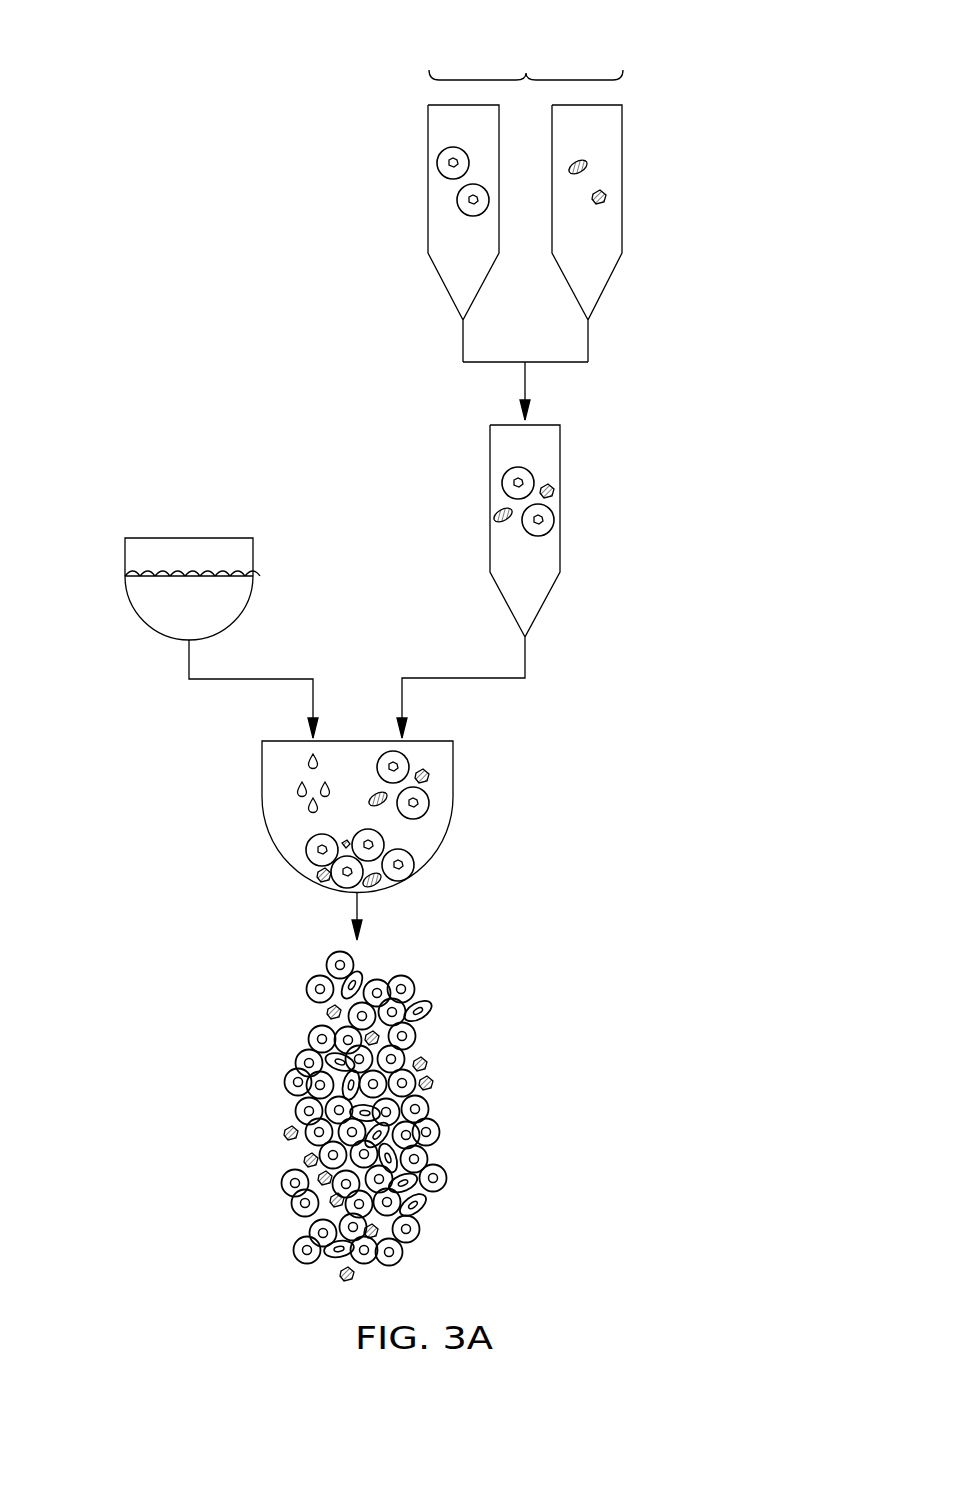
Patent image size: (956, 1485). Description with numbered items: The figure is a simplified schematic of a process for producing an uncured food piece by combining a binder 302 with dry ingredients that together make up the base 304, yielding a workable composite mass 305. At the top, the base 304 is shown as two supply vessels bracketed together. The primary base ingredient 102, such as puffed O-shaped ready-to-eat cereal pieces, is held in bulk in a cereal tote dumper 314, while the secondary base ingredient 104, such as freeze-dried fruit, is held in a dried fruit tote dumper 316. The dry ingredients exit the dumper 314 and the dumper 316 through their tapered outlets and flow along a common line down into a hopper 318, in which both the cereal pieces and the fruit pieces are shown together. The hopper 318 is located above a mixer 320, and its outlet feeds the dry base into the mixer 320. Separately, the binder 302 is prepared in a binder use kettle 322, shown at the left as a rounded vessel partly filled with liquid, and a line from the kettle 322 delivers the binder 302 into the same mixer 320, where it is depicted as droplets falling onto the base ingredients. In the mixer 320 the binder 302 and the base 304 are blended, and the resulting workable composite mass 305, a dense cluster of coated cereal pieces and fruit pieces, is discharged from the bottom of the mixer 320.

The base 304 is at (527, 70).
The cereal tote dumper 314 is at (428, 130).
The dried fruit tote dumper 316 is at (625, 130).
The primary base ingredient 102 is at (437, 163).
The secondary base ingredient 104 is at (607, 195).
The hopper 318 is at (562, 462).
The binder use kettle 322 is at (188, 535).
The binder 302 is at (147, 610).
The mixer 320 is at (455, 768).
The workable composite mass 305 is at (420, 1100).